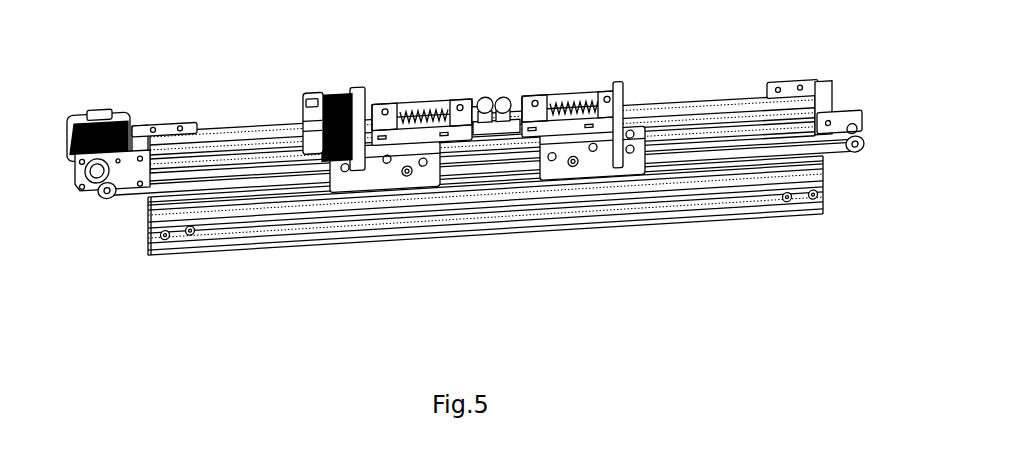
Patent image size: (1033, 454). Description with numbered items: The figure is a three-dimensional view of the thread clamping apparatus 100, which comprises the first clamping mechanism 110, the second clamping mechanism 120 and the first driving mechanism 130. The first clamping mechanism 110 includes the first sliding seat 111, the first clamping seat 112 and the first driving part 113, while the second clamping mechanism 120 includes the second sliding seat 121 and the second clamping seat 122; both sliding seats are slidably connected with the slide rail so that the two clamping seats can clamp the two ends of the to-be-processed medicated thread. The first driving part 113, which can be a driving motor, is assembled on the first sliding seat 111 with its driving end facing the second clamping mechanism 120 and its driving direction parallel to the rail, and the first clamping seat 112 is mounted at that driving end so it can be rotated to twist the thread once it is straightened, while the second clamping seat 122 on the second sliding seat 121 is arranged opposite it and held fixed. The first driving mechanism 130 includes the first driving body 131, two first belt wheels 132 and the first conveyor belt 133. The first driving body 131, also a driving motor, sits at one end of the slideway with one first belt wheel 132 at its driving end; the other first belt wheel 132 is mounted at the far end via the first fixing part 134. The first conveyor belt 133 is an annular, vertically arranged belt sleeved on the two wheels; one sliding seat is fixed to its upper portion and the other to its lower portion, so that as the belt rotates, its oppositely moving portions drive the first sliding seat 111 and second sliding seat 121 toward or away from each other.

The thread clamping apparatus 100 is at (318, 51).
The first clamping mechanism 110 is at (397, 160).
The first sliding seat 111 is at (394, 178).
The first clamping seat 112 is at (443, 145).
The first driving part 113 is at (316, 153).
The second clamping mechanism 120 is at (583, 155).
The second sliding seat 121 is at (600, 168).
The second clamping seat 122 is at (550, 138).
The first driving mechanism 130 is at (123, 164).
The first driving body 131 is at (78, 185).
The first belt wheel 132 is at (107, 198).
The first conveyor belt 133 is at (143, 192).
The first fixing part 134 is at (850, 112).